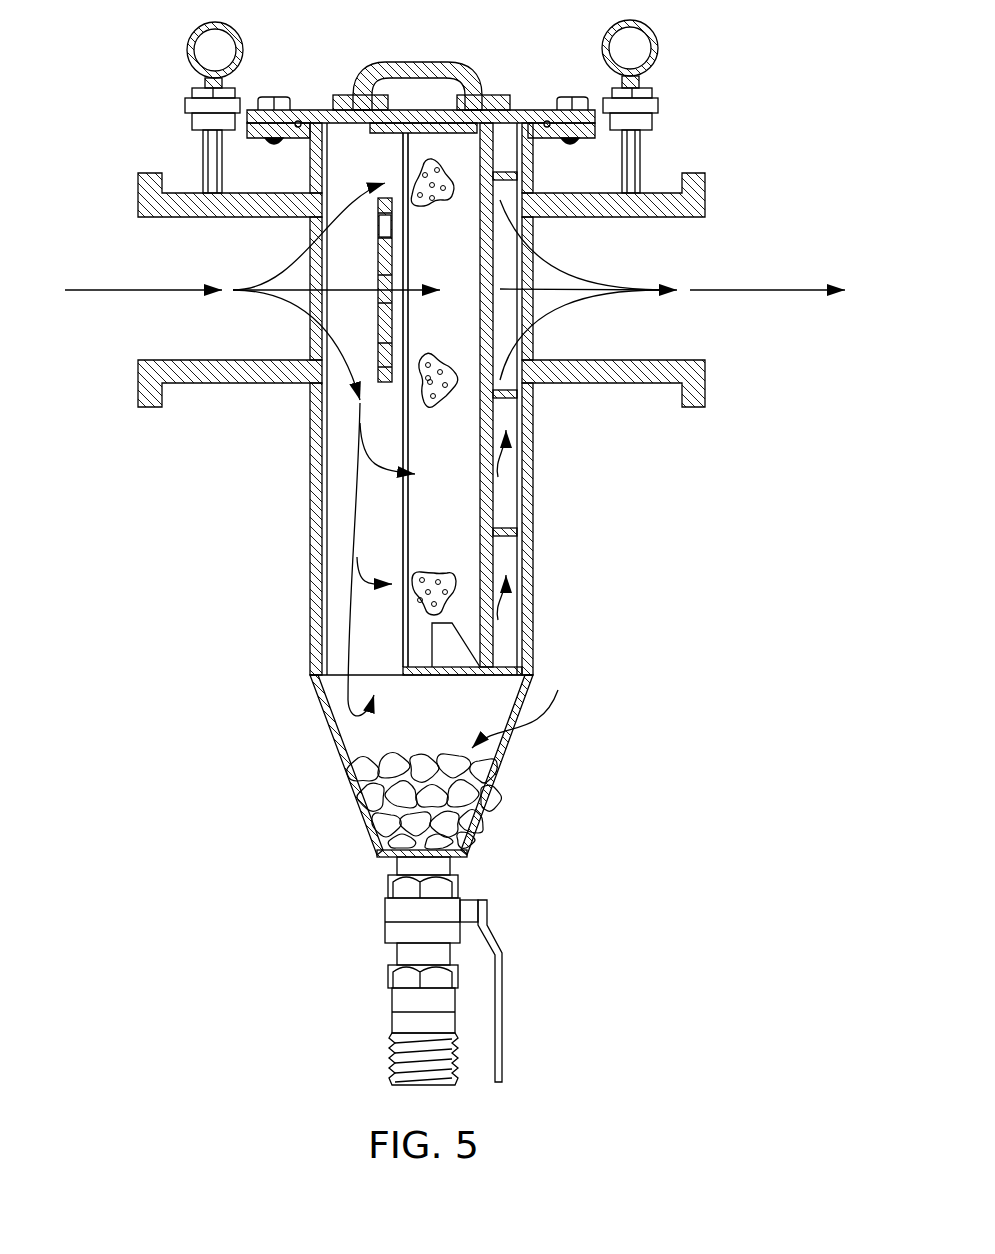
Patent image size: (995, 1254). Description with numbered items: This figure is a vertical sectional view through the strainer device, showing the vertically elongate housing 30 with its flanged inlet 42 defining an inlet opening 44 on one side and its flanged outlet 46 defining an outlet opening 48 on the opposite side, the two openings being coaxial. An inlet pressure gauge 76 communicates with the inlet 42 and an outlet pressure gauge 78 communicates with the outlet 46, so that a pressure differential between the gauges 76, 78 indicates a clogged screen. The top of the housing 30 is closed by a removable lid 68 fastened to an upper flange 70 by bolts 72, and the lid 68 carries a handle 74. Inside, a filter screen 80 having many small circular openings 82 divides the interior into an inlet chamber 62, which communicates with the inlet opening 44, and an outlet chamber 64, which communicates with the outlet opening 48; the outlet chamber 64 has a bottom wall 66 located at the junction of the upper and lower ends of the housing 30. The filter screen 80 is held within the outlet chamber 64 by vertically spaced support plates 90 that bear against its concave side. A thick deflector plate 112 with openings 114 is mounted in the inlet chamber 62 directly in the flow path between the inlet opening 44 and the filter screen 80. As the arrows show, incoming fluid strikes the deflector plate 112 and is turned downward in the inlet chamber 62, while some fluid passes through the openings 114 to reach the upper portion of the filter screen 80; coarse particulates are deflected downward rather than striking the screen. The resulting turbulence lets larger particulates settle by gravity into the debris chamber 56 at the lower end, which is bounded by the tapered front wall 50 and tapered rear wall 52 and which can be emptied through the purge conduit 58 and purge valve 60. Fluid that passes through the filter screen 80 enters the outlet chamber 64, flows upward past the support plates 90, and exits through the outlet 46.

The housing 30 is at (290, 462).
The inlet 42 is at (120, 254).
The inlet opening 44 is at (152, 358).
The outlet 46 is at (728, 252).
The outlet opening 48 is at (660, 358).
The tapered front wall 50 is at (338, 745).
The tapered rear wall 52 is at (505, 745).
The debris chamber 56 is at (521, 705).
The purge conduit 58 is at (400, 997).
The purge valve 60 is at (500, 912).
The inlet chamber 62 is at (350, 482).
The outlet chamber 64 is at (500, 497).
The bottom wall 66 is at (500, 665).
The removable lid 68 is at (545, 120).
The upper flange 70 is at (545, 135).
The bolts 72 is at (570, 97).
The handle 74 is at (432, 75).
The inlet pressure gauge 76 is at (189, 52).
The outlet pressure gauge 78 is at (658, 50).
The filter screen 80 is at (460, 258).
The openings 82 is at (440, 370).
The support plates 90 is at (510, 390).
The deflector plate 112 is at (383, 260).
The openings 114 is at (387, 227).